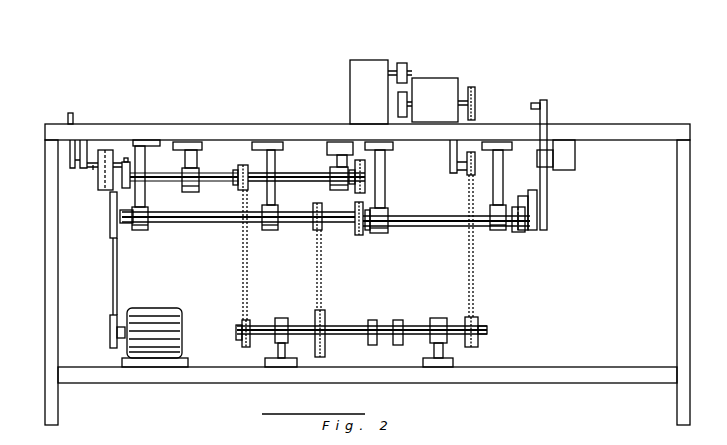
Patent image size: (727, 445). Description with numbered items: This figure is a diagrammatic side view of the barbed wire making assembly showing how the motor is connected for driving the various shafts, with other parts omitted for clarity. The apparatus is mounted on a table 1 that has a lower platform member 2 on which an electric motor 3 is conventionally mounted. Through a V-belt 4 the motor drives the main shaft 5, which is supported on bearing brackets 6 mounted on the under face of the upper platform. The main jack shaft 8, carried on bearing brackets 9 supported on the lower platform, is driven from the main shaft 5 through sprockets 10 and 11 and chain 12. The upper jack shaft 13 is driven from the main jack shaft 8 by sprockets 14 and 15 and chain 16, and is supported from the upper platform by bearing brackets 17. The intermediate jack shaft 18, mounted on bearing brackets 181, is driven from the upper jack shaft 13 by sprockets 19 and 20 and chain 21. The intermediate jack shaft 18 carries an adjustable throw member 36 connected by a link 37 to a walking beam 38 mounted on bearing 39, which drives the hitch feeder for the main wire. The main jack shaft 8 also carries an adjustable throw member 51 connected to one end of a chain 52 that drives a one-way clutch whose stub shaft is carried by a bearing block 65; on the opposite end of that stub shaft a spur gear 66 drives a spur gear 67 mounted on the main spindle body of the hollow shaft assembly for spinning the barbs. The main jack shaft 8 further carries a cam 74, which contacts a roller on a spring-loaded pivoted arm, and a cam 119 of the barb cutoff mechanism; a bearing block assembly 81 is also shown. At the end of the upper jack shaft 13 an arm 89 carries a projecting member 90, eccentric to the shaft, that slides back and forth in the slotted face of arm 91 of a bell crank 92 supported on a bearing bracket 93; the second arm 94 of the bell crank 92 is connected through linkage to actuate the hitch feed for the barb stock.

The table 1 is at (44, 262).
The lower platform member 2 is at (545, 366).
The electric motor 3 is at (140, 310).
The V-belt 4 is at (111, 276).
The main shaft 5 is at (202, 224).
The bearing brackets 6 is at (140, 197).
The main jack shaft 8 is at (349, 326).
The bearing brackets 9 is at (282, 318).
The sprocket 10 is at (323, 216).
The sprocket 11 is at (323, 316).
The chain 12 is at (322, 272).
The upper jack shaft 13 is at (290, 176).
The sprocket 14 is at (240, 337).
The sprocket 15 is at (240, 170).
The chain 16 is at (243, 264).
The bearing brackets 17 is at (184, 163).
The intermediate jack shaft 18 is at (407, 218).
The sprocket 19 is at (356, 188).
The sprocket 20 is at (369, 232).
The chain 21 is at (355, 222).
The adjustable throw member 36 is at (518, 233).
The link 37 is at (535, 230).
The walking beam 38 is at (548, 184).
The bearing 39 is at (577, 152).
The adjustable throw member 51 is at (480, 332).
The chain 52 is at (474, 298).
The bearing block 65 is at (455, 80).
The spur gear 66 is at (408, 100).
The spur gear 67 is at (405, 64).
The cam 74 is at (400, 320).
The bearing block assembly 81 is at (352, 60).
The arm 89 is at (130, 160).
The projecting member 90 is at (112, 150).
The arm 91 is at (109, 150).
The bell crank 92 is at (100, 180).
The bearing bracket 93 is at (90, 166).
The second arm 94 is at (72, 112).
The cam 119 is at (372, 320).
The bearing brackets 181 is at (383, 187).